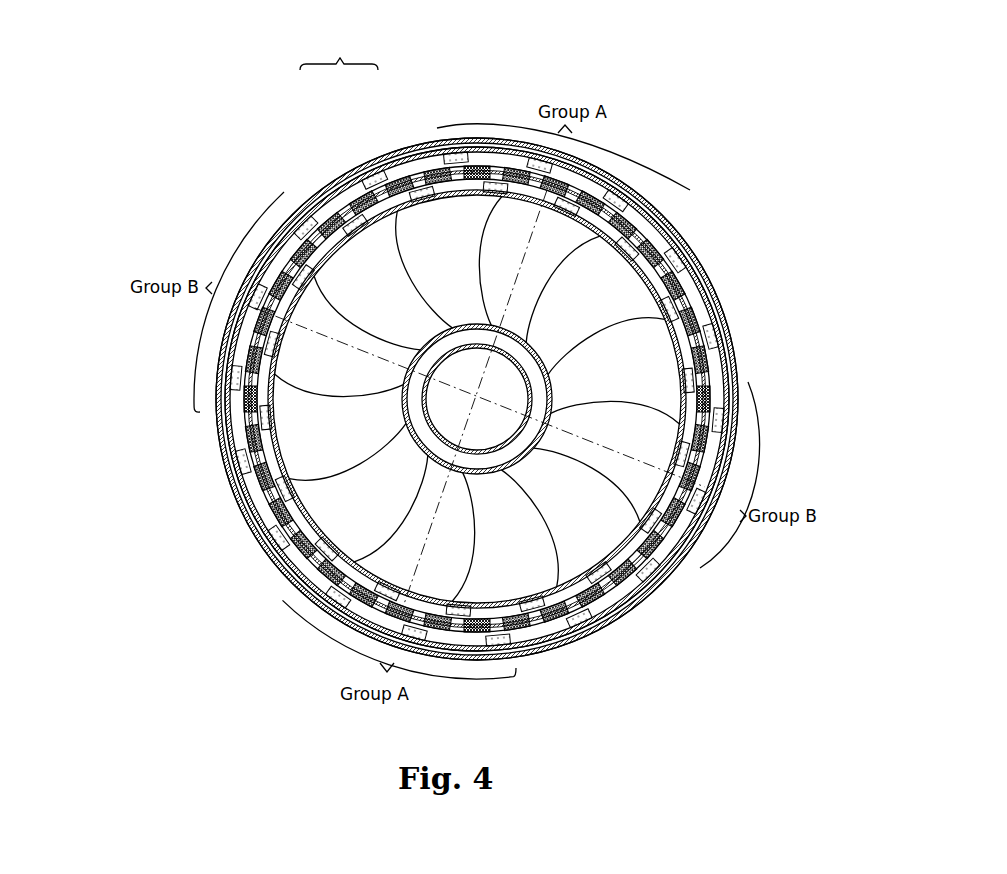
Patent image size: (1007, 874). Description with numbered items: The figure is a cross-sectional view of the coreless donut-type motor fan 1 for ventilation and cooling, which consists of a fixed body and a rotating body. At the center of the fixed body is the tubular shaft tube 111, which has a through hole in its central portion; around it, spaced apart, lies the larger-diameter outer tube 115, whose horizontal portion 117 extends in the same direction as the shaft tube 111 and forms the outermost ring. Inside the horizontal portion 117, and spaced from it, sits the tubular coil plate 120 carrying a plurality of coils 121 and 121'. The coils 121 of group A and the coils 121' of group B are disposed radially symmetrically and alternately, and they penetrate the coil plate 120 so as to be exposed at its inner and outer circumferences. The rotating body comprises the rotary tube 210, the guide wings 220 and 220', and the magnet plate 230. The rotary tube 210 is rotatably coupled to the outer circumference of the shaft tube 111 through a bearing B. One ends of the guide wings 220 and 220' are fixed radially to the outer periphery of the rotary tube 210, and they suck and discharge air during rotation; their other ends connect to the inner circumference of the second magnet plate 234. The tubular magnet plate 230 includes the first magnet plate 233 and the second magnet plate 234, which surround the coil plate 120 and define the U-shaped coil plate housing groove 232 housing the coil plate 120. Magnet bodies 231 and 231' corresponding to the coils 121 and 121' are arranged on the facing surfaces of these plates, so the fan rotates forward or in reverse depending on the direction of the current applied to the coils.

The coreless donut-type motor fan 1 is at (140, 28).
The shaft tube 111 is at (403, 400).
The outer tube 115 is at (220, 443).
The horizontal portion 117 is at (477, 399).
The coil plate 120 is at (687, 305).
The coil 121 is at (482, 354).
The coil 121' is at (409, 399).
The rotary tube 210 is at (293, 567).
The guide wing 220 is at (538, 454).
The guide wing 220' is at (340, 368).
The magnet plate 230 is at (339, 54).
The magnet body 231 is at (568, 399).
The magnet body 231' is at (541, 398).
The coil plate housing groove 232 is at (680, 280).
The first magnet plate 233 is at (428, 157).
The second magnet plate 234 is at (322, 203).
The bearing B is at (700, 570).